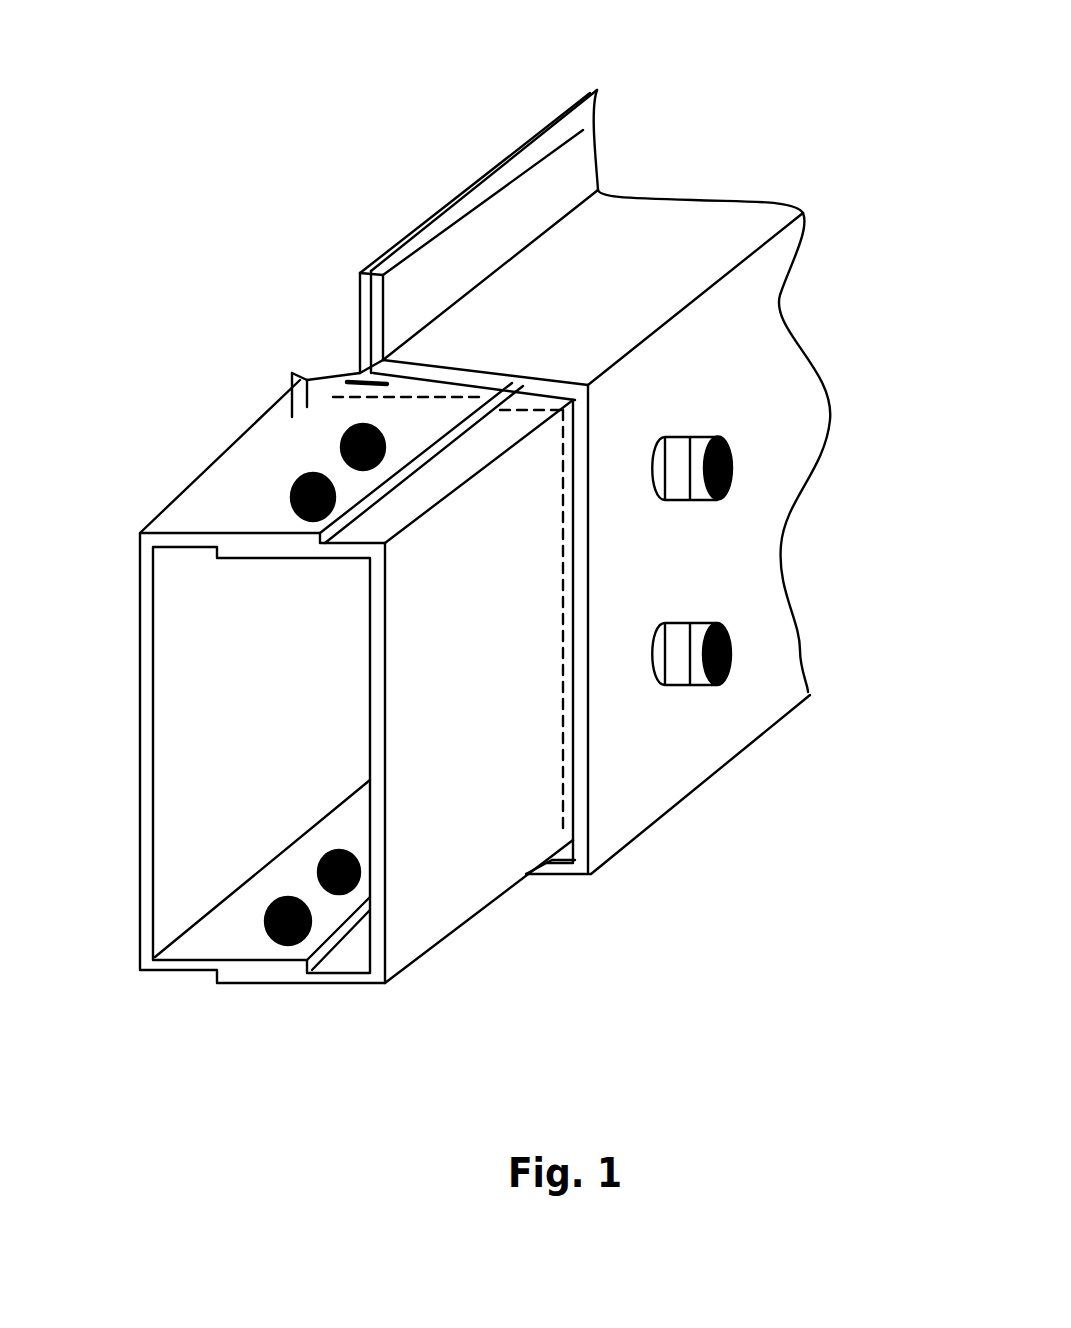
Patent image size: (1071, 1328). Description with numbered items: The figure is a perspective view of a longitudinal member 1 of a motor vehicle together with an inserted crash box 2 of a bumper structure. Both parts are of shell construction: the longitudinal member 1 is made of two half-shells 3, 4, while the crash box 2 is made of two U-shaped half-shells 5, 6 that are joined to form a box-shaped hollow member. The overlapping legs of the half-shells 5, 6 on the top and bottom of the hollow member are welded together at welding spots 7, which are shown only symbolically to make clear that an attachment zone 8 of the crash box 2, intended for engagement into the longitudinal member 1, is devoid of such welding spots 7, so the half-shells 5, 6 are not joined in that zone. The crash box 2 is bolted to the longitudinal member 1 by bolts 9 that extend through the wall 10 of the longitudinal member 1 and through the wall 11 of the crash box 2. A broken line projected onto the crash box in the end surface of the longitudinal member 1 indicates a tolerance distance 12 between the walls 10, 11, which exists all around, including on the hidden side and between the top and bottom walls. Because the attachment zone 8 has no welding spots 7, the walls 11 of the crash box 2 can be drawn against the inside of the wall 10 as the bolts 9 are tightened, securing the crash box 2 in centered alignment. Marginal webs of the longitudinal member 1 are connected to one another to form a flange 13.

The longitudinal member 1 is at (702, 192).
The crash box 2 is at (358, 987).
The half-shell 3 is at (723, 342).
The half-shell 4 is at (293, 373).
The half-shell 5 is at (439, 854).
The half-shell 6 is at (139, 716).
The welding spots 7 is at (343, 447).
The attachment zone 8 is at (347, 382).
The bolts 9 is at (727, 461).
The wall 10 is at (625, 567).
The wall 11 is at (570, 662).
The tolerance distance 12 is at (569, 828).
The flange 13 is at (600, 112).